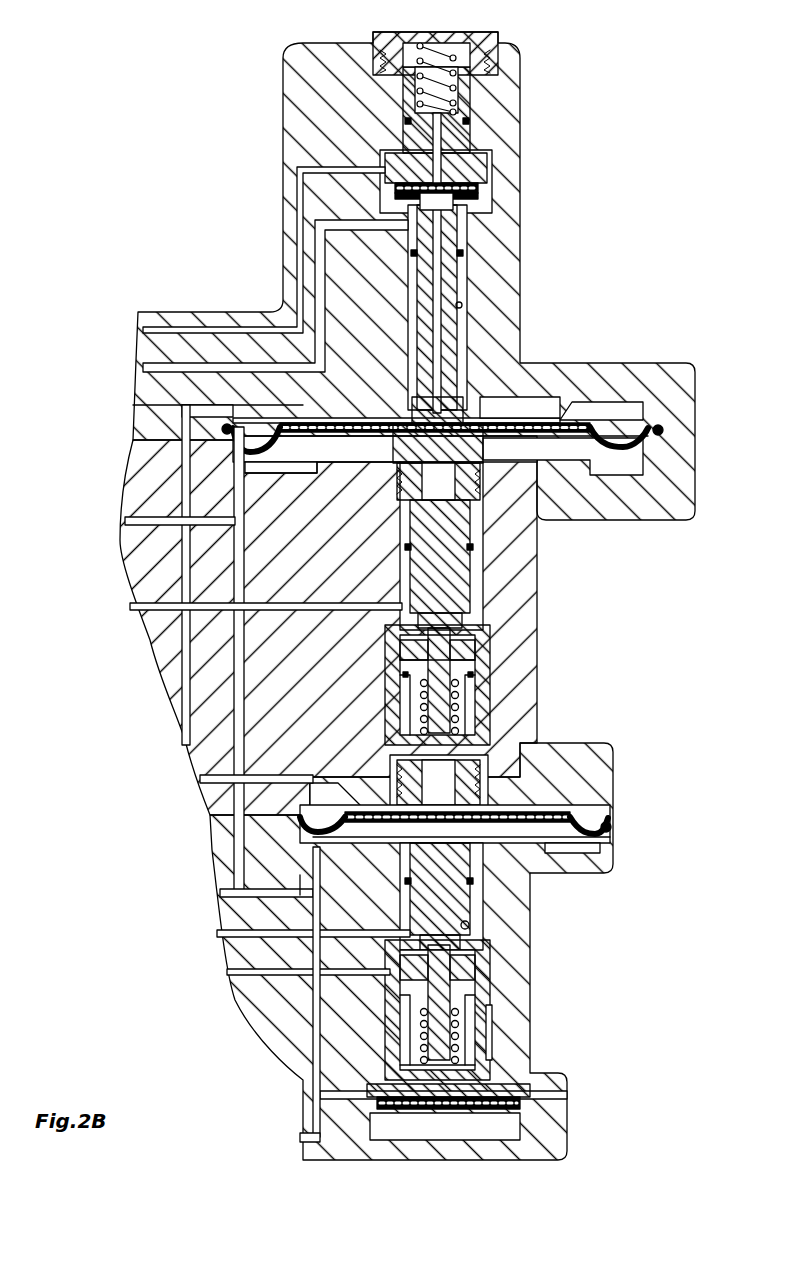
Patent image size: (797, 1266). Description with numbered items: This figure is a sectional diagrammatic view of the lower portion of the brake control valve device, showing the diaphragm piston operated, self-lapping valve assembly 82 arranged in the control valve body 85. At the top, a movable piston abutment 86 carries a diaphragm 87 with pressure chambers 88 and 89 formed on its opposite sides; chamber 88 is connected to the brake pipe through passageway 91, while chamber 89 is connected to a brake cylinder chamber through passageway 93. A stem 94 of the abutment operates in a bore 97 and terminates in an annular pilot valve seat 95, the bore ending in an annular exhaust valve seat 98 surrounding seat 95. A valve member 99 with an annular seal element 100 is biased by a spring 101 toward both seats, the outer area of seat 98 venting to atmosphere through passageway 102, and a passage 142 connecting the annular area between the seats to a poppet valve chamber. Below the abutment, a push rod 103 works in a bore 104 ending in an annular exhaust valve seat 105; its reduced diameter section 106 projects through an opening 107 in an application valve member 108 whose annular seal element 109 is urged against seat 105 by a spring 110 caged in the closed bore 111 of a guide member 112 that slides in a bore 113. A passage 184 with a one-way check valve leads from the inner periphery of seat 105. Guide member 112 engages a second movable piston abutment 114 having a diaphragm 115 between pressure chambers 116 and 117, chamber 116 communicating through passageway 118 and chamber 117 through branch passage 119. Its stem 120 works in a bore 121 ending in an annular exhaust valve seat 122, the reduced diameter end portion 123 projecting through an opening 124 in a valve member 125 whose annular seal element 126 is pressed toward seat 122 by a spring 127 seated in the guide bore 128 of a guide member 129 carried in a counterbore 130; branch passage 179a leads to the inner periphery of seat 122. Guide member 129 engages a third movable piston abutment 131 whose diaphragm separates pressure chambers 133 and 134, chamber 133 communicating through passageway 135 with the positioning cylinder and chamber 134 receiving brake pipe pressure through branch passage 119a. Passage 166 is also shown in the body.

The self-lapping valve assembly 82 is at (472, 373).
The body 85 is at (320, 702).
The movable piston abutment 86 is at (470, 440).
The diaphragm 87 is at (660, 440).
The pressure chamber 88 is at (625, 410).
The pressure chamber 89 is at (605, 465).
The passageway 91 is at (238, 510).
The passageway 93 is at (182, 410).
The stem 94 is at (458, 288).
The annular pilot valve seat 95 is at (478, 196).
The bore 97 is at (462, 305).
The annular exhaust valve seat 98 is at (455, 203).
The valve member 99 is at (455, 131).
The annular seal element 100 is at (478, 186).
The spring 101 is at (432, 52).
The passageway 102 is at (298, 190).
The push rod 103 is at (448, 562).
The bore 104 is at (410, 565).
The annular exhaust valve seat 105 is at (470, 628).
The reduced diameter section 106 is at (452, 660).
The opening 107 is at (475, 643).
The application valve member 108 is at (410, 660).
The annular seal element 109 is at (400, 637).
The spring 110 is at (458, 697).
The closed bore 111 is at (410, 698).
The guide member 112 is at (403, 716).
The bore 113 is at (473, 717).
The movable piston abutment 114 is at (483, 790).
The diaphragm 115 is at (580, 830).
The pressure chamber 116 is at (340, 795).
The pressure chamber 117 is at (550, 843).
The passageway 118 is at (205, 779).
The branch passage 119 is at (312, 895).
The branch passage 119a is at (315, 920).
The stem 120 is at (430, 895).
The bore 121 is at (470, 922).
The annular exhaust valve seat 122 is at (478, 950).
The reduced diameter end portion 123 is at (440, 1003).
The opening 124 is at (420, 1022).
The valve member 125 is at (470, 975).
The annular seal element 126 is at (398, 958).
The spring 127 is at (470, 1058).
The guide bore 128 is at (412, 1040).
The guide member 129 is at (405, 1062).
The counterbore 130 is at (492, 1022).
The movable piston abutment 131 is at (420, 1115).
The pressure chamber 133 is at (530, 1088).
The pressure chamber 134 is at (495, 1140).
The passageway 135 is at (230, 972).
The passage 142 is at (318, 269).
The passage 166 is at (128, 521).
The branch passage 179a is at (220, 933).
The passage 184 is at (132, 606).